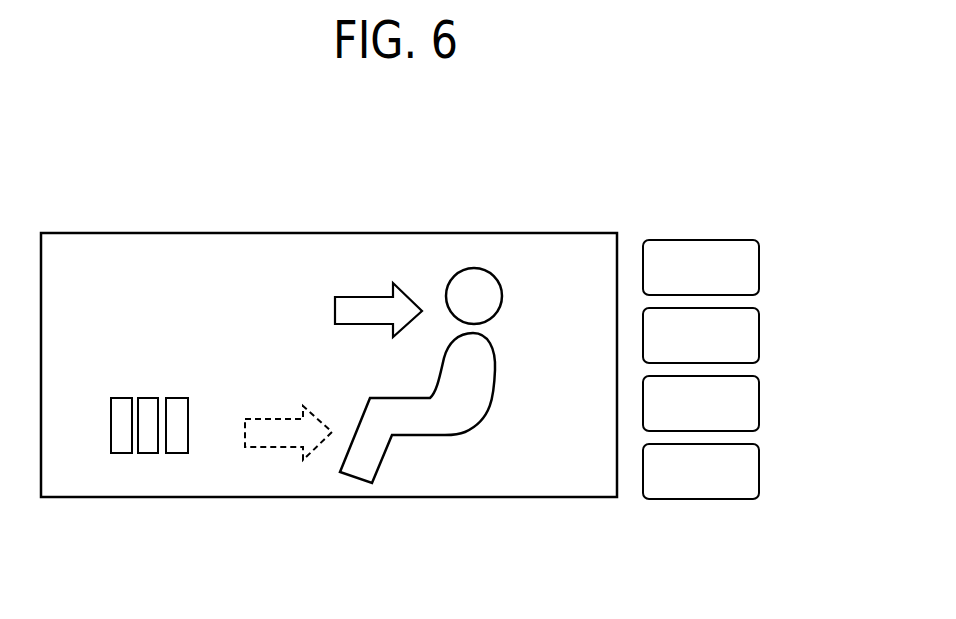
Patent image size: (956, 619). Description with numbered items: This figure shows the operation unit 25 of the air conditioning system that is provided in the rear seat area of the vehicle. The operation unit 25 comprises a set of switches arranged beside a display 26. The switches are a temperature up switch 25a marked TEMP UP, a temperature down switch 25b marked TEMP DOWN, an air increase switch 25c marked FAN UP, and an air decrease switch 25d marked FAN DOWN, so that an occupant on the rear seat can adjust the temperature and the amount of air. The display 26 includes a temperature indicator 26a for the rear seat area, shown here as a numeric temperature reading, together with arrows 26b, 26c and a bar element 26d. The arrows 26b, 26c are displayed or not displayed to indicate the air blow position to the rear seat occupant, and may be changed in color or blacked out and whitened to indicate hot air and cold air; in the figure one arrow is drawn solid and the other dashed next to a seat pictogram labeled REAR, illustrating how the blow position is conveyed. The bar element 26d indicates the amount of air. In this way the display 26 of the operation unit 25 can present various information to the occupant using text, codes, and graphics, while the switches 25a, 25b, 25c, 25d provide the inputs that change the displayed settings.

The operation unit 25 is at (553, 155).
The temperature up switch 25a is at (760, 266).
The temperature down switch 25b is at (760, 334).
The air increase switch 25c is at (760, 402).
The air decrease switch 25d is at (760, 470).
The display 26 is at (263, 195).
The temperature indicator 26a is at (181, 282).
The arrow 26b is at (364, 284).
The arrow 26c is at (272, 466).
The bar element 26d is at (147, 466).